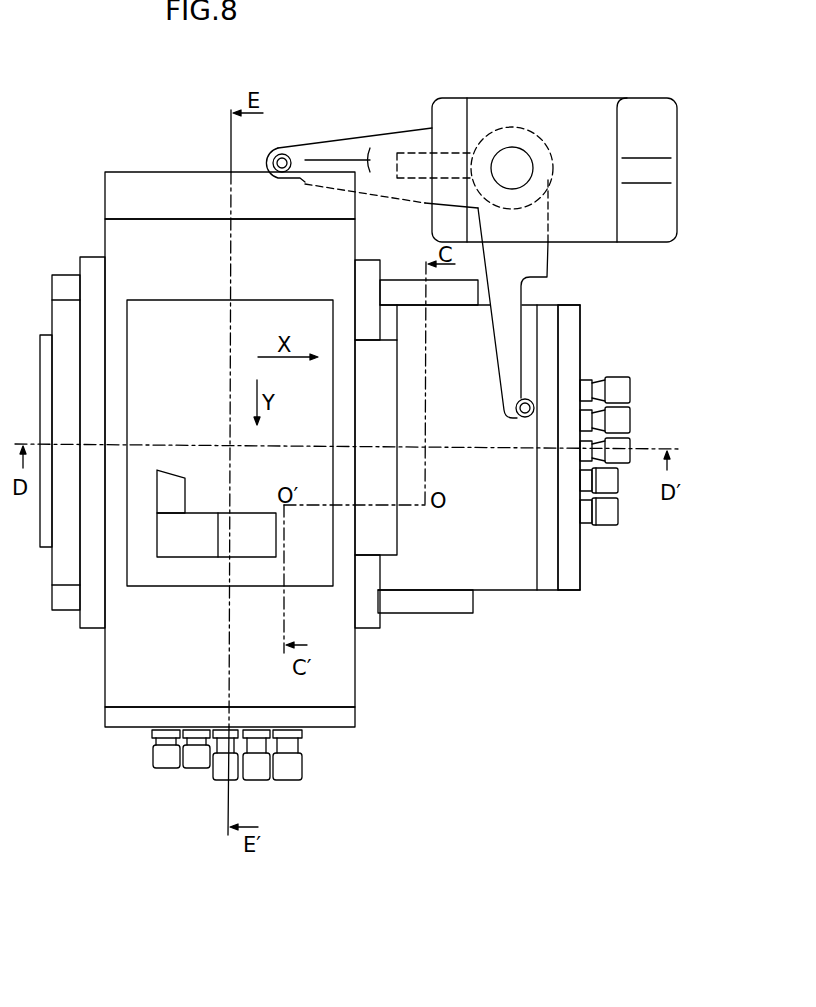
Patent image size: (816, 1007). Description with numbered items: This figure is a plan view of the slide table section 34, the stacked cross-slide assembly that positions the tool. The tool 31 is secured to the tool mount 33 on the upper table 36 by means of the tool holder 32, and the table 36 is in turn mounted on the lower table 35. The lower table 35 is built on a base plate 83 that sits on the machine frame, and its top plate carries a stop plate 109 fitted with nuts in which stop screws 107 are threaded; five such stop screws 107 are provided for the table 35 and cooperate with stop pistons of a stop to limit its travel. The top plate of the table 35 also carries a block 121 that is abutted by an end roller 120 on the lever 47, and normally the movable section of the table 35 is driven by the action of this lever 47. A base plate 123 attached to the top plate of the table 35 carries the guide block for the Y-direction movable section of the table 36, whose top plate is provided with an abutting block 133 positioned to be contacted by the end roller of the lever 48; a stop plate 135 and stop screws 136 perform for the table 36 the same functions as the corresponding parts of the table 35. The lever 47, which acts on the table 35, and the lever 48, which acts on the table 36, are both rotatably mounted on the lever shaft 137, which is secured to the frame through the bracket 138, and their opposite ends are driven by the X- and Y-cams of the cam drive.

The tool 31 is at (165, 498).
The tool holder 32 is at (182, 540).
The tool mount 33 is at (195, 577).
The slide table section 34 is at (95, 253).
The table 35 is at (520, 577).
The table 36 is at (343, 677).
The lever 47 is at (515, 387).
The lever 48 is at (387, 152).
The base plate 83 is at (460, 603).
The stop screw 107 is at (610, 517).
The stop plate 109 is at (573, 563).
The end roller 120 is at (535, 413).
The block 121 is at (548, 333).
The base plate 123 is at (368, 618).
The abutting block 133 is at (205, 195).
The stop plate 135 is at (337, 722).
The stop screw 136 is at (293, 768).
The lever shaft 137 is at (513, 152).
The bracket 138 is at (580, 142).